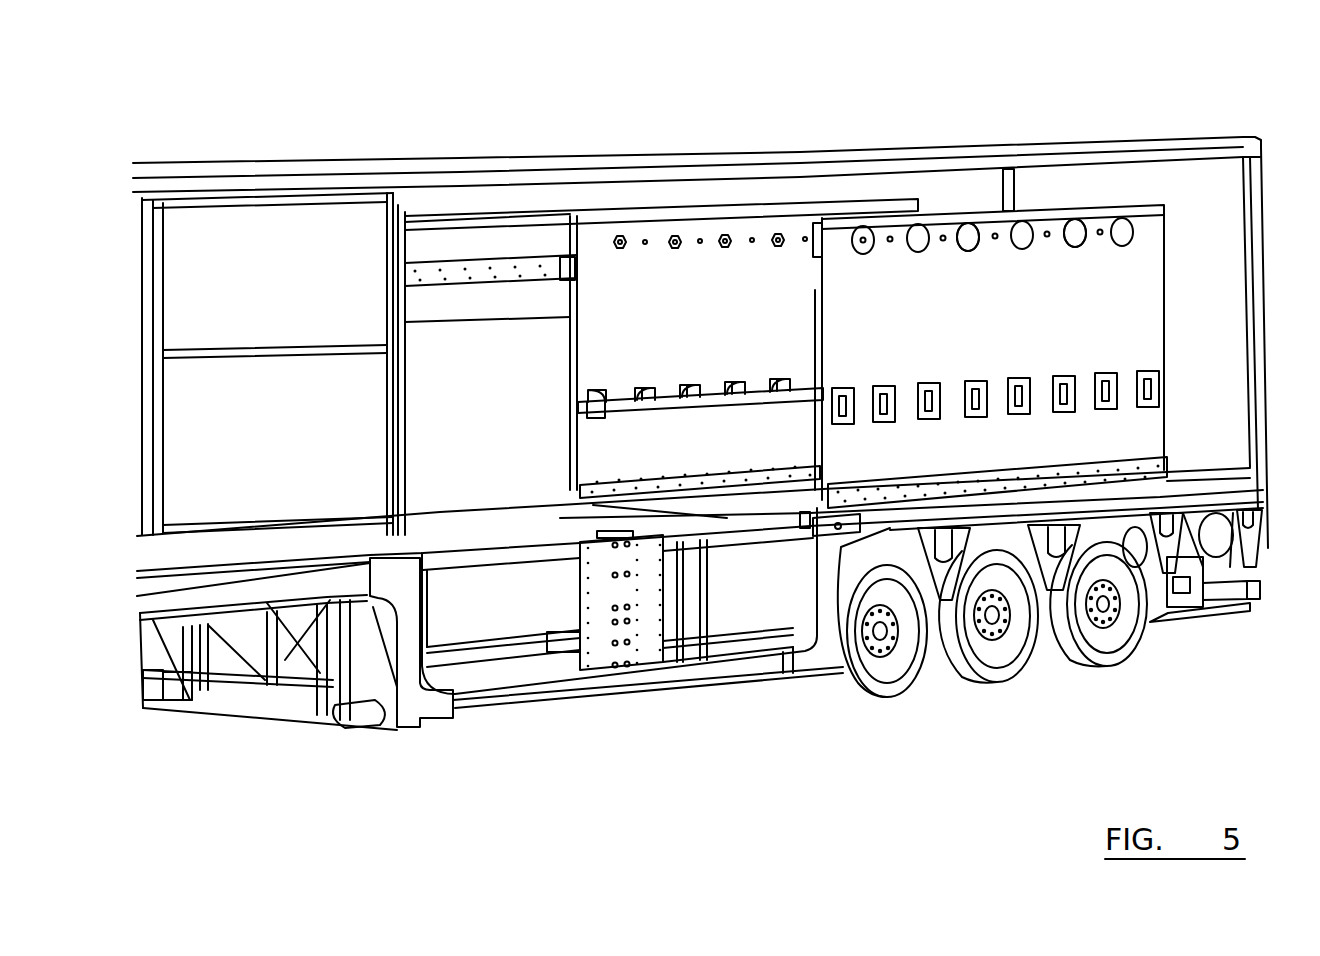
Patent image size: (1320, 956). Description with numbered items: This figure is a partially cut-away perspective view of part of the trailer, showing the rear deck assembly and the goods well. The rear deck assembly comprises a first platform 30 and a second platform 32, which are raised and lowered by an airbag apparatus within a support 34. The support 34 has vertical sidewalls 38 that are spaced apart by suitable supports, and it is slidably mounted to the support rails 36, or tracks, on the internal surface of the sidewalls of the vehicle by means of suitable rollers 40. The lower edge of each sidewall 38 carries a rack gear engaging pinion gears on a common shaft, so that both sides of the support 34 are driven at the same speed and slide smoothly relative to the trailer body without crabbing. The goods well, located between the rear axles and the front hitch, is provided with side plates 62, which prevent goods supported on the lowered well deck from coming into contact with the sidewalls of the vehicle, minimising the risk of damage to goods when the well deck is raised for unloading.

The first platform 30 is at (578, 405).
The second platform 32 is at (700, 497).
The support 34 is at (1136, 278).
The support rails 36 is at (553, 265).
The vertical sidewalls 38 is at (641, 232).
The rollers 40 is at (963, 232).
The side plates 62 is at (647, 652).